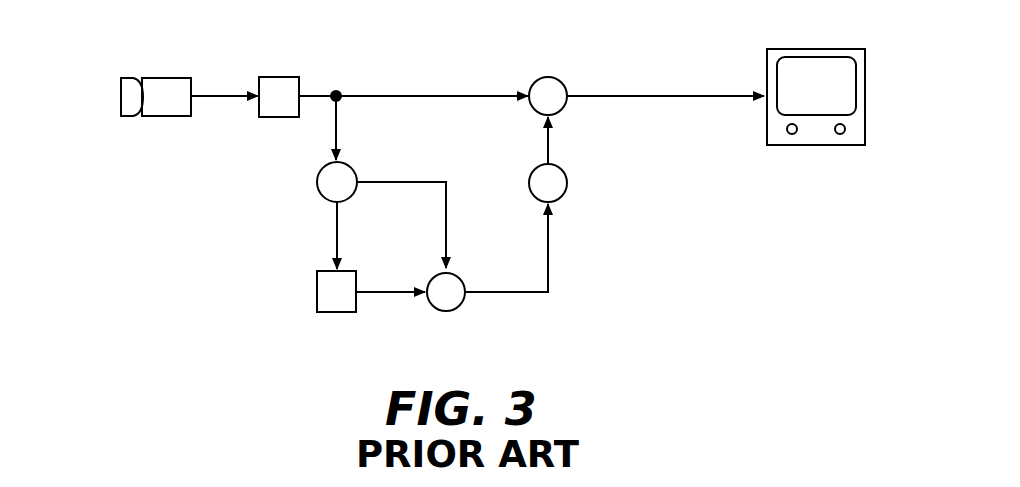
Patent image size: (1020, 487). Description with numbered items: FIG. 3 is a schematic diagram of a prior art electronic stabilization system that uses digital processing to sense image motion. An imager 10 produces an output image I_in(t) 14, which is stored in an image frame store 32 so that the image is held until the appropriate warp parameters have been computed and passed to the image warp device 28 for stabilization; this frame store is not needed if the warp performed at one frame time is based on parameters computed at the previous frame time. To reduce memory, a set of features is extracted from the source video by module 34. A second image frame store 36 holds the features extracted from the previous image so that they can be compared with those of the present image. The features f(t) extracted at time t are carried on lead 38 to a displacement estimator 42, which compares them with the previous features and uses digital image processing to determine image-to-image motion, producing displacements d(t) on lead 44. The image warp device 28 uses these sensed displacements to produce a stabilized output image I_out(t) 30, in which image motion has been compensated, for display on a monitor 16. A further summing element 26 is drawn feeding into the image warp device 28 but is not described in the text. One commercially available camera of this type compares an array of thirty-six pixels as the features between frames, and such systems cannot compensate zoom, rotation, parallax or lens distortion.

The imager 10 is at (157, 117).
The output I_in(t) 14 is at (210, 96).
The monitor 16 is at (800, 145).
The summing circuit 26 is at (567, 183).
The image warp device 28 is at (556, 78).
The stabilized output image I_out(t) 30 is at (650, 96).
The image frame store 32 is at (283, 77).
The feature extraction module 34 is at (322, 196).
The second image frame store 36 is at (317, 296).
The lead carrying features f(t) 38 is at (446, 218).
The displacement estimator 42 is at (448, 311).
The lead carrying displacements d(t) 44 is at (532, 292).